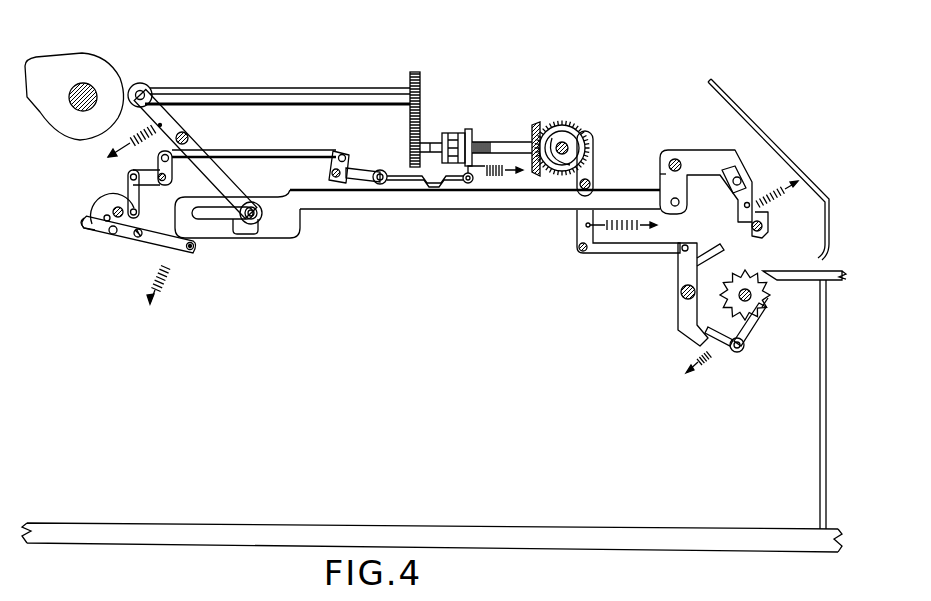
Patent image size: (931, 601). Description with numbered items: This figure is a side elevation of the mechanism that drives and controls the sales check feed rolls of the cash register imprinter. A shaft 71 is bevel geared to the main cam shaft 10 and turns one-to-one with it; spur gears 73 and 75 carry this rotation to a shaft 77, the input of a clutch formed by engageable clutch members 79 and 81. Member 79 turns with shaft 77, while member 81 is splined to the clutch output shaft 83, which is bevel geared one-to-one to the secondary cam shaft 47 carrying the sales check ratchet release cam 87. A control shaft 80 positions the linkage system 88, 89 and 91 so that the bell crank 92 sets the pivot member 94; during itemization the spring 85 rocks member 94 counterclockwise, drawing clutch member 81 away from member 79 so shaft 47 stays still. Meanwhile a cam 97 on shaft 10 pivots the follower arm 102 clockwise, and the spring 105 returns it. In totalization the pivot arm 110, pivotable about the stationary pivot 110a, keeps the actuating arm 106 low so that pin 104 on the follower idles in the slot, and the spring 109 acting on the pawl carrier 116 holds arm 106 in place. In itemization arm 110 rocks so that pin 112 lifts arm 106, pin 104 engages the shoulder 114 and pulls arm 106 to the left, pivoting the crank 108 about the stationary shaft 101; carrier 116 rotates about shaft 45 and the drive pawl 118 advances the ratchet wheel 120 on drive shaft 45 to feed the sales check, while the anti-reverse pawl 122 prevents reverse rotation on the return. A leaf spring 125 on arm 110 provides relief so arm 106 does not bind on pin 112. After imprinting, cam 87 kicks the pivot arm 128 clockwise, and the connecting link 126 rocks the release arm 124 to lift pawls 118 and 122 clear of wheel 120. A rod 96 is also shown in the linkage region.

The cam 97 is at (86, 56).
The main cam shaft 10 is at (96, 80).
The shaft 71 is at (193, 86).
The spur gear 73 is at (417, 72).
The spur gear 75 is at (410, 143).
The shaft 77 is at (432, 141).
The clutch member 79 is at (447, 133).
The clutch member 81 is at (470, 129).
The clutch output shaft 83 is at (490, 142).
The secondary cam shaft 47 is at (560, 126).
The sales check ratchet release cam 87 is at (575, 160).
The pivot arm 128 is at (588, 131).
The stationary shaft 101 is at (668, 150).
The crank 108 is at (660, 174).
The spring 109 is at (790, 182).
The pawl carrier 116 is at (750, 205).
The drive pawl 118 is at (762, 243).
The drive shaft 45 is at (757, 295).
The ratchet wheel 120 is at (763, 308).
The anti-reverse pawl 122 is at (745, 352).
The release arm 124 is at (678, 272).
The connecting link 126 is at (590, 256).
The actuating arm 106 is at (299, 236).
The shoulder 114 is at (246, 240).
The pin 104 is at (255, 203).
The follower arm 102 is at (170, 122).
The linkage member 91 is at (238, 150).
The bell crank 92 is at (338, 152).
The pivot member 94 is at (362, 169).
The rod 96 is at (440, 186).
The spring 85 is at (497, 181).
The spring 105 is at (100, 146).
The linkage member 88 is at (126, 181).
The linkage member 89 is at (150, 172).
The control shaft 80 is at (99, 194).
The leaf spring 125 is at (84, 220).
The pivot arm 110 is at (85, 237).
The stationary pivot 110a is at (135, 240).
The pin 112 is at (192, 252).